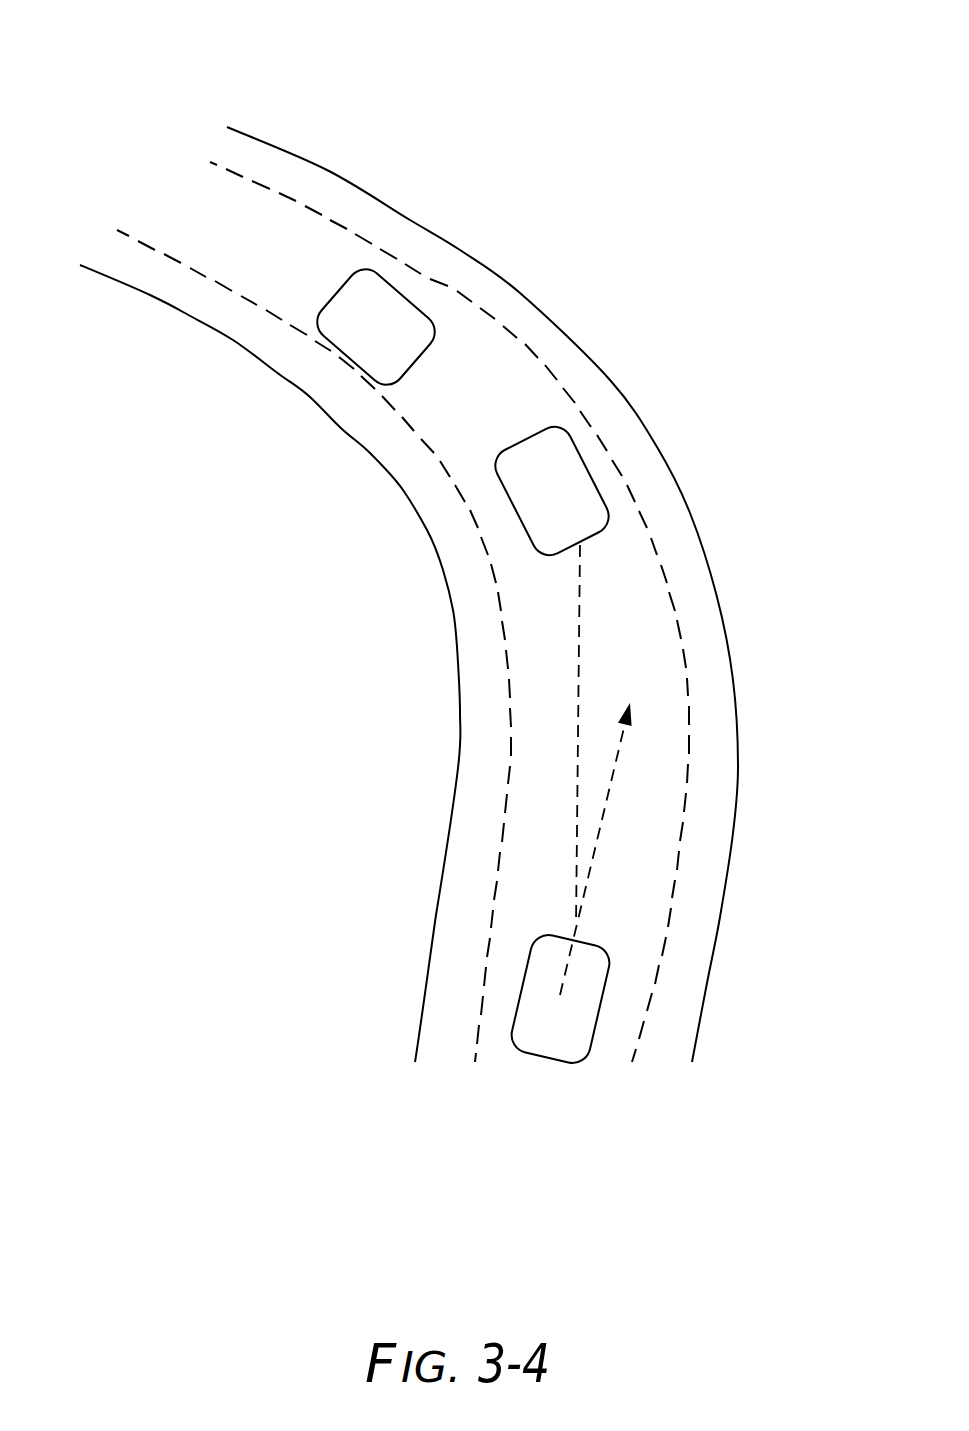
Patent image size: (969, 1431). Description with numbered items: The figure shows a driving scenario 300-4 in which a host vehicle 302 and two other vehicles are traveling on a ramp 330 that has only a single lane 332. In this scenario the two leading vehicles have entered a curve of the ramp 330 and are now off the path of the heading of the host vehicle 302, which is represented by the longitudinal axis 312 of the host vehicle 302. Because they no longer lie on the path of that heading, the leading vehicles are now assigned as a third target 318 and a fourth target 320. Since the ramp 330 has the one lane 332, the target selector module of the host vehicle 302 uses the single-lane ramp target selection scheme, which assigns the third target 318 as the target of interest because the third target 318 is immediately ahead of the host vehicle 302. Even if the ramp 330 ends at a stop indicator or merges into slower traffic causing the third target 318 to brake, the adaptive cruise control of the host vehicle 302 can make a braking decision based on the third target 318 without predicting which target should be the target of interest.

The driving scenario 300-4 is at (117, 52).
The host vehicle 302 is at (545, 1058).
The longitudinal axis 312 is at (613, 783).
The T3 318 is at (587, 470).
The T4 320 is at (347, 355).
The ramp 330 is at (227, 662).
The lane 332 is at (190, 205).